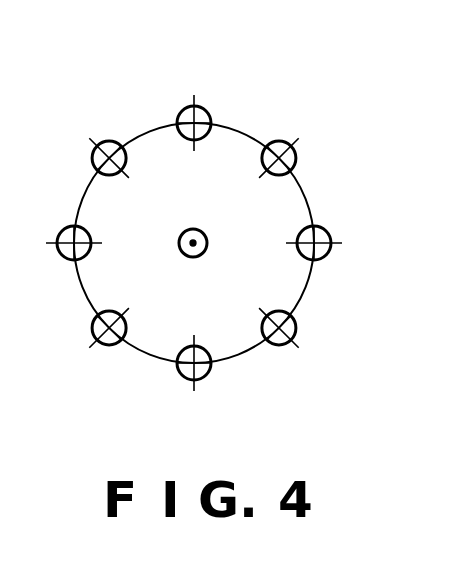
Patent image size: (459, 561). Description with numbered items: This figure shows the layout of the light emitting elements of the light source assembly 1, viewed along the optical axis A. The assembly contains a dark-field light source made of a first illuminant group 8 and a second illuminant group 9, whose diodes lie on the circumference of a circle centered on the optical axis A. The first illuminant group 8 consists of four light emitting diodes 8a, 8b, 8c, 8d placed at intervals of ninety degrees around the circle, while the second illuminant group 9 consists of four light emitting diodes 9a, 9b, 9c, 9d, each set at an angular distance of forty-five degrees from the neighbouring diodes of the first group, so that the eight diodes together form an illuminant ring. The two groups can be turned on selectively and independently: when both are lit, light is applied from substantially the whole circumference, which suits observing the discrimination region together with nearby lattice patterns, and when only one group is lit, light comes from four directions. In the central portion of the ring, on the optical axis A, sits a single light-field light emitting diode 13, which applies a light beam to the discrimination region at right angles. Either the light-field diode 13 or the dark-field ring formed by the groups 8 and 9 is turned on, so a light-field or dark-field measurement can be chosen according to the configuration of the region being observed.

The light source assembly 1 is at (264, 108).
The first illuminant group 8 is at (190, 101).
The light emitting diode 8a is at (207, 116).
The light emitting diode 8b is at (329, 232).
The light emitting diode 8c is at (207, 375).
The light emitting diode 8d is at (66, 259).
The second illuminant group 9 is at (296, 133).
The light emitting diode 9a is at (278, 143).
The light emitting diode 9b is at (298, 321).
The light emitting diode 9c is at (112, 345).
The light emitting diode 9d is at (92, 159).
The light emitting diode 13 is at (208, 242).
The optical axis A is at (197, 255).